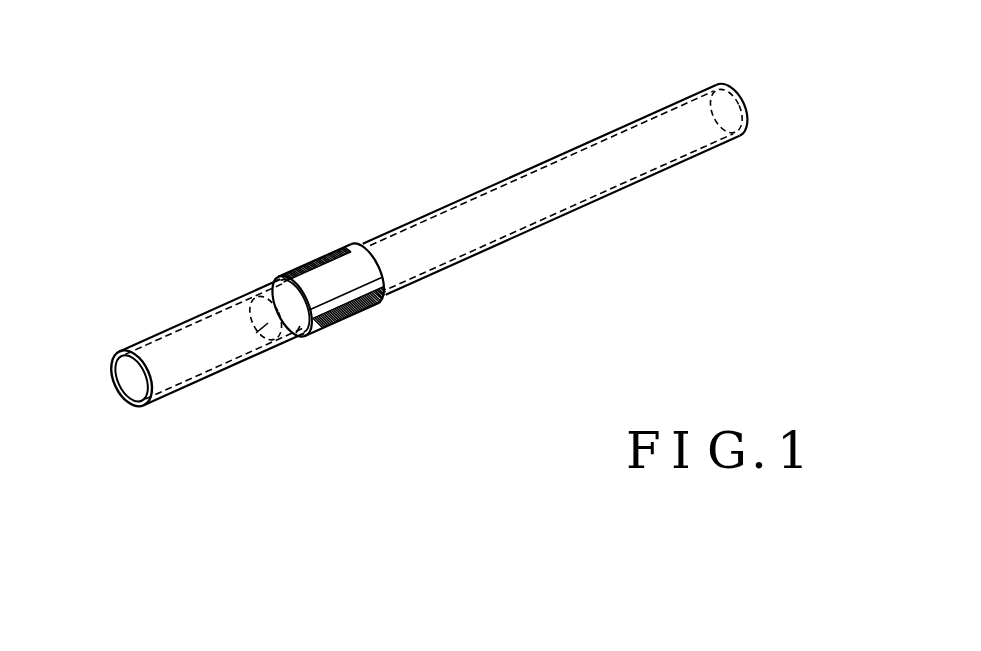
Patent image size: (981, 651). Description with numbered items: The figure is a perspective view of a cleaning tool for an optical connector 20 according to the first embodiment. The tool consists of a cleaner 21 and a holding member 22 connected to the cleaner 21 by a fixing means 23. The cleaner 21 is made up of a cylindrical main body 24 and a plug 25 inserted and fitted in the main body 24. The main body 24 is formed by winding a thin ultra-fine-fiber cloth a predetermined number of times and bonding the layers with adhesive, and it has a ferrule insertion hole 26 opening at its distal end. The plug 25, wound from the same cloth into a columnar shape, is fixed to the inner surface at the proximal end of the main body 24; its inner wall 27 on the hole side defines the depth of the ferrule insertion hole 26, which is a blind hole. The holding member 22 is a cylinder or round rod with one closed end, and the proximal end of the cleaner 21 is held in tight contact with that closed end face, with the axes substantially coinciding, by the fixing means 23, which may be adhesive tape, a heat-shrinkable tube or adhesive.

The cleaning tool for an optical connector 20 is at (561, 59).
The cleaner 21 is at (199, 306).
The holding member 22 is at (452, 206).
The fixing means 23 is at (353, 300).
The main body 24 is at (147, 348).
The plug 25 is at (298, 331).
The ferrule insertion hole 26 is at (130, 382).
The inner wall 27 is at (265, 341).